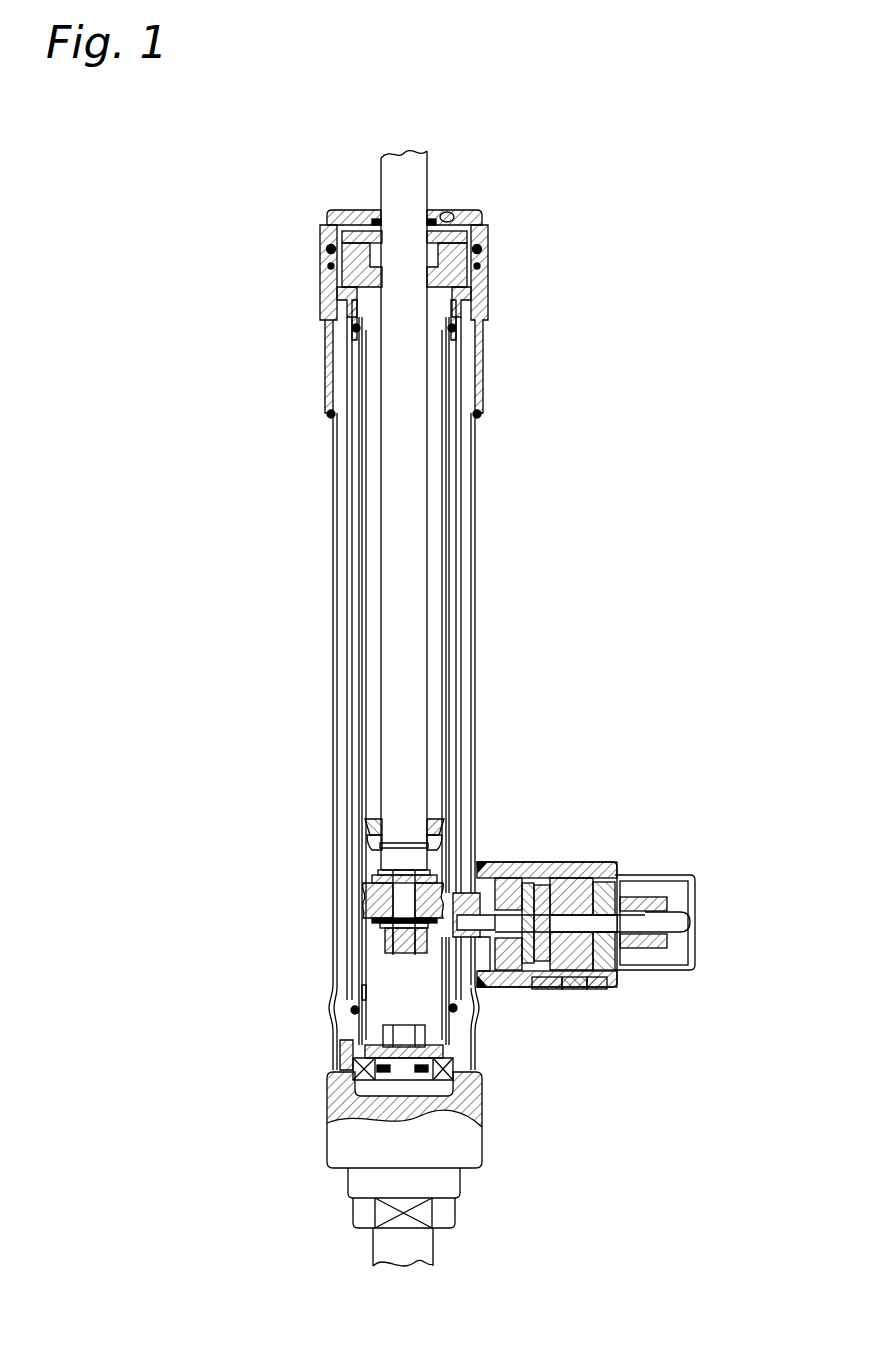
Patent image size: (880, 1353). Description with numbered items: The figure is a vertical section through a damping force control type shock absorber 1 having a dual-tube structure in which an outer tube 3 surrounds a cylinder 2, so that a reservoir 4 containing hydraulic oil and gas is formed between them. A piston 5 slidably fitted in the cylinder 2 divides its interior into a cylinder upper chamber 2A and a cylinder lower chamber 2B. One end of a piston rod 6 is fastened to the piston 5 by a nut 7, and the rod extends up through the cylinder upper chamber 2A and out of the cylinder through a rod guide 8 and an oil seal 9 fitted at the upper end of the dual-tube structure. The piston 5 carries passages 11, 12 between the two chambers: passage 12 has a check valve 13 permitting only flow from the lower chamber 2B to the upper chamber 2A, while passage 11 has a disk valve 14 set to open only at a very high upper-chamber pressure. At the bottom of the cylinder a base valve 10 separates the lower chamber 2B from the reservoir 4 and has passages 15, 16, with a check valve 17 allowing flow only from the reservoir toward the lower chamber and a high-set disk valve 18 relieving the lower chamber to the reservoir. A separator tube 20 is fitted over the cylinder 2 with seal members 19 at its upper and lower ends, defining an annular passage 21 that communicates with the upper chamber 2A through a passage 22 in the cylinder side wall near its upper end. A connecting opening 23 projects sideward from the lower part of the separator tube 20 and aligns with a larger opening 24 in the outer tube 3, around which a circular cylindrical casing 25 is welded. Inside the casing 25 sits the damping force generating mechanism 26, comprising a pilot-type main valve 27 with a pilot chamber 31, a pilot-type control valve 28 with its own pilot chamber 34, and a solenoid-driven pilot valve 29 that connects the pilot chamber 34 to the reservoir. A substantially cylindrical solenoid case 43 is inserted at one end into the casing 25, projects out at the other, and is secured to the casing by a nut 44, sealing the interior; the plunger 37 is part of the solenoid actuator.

The damping force control type shock absorber 1 is at (609, 210).
The cylinder 2 is at (448, 440).
The cylinder upper chamber 2A is at (347, 678).
The cylinder lower chamber 2B is at (362, 985).
The outer tube 3 is at (478, 480).
The reservoir 4 is at (333, 495).
The piston 5 is at (375, 900).
The piston rod 6 is at (388, 180).
The nut 7 is at (385, 950).
The rod guide 8 is at (332, 292).
The oil seal 9 is at (450, 213).
The base valve 10 is at (482, 1070).
The passage 11 is at (380, 885).
The passage 12 is at (482, 880).
The check valve 13 is at (471, 862).
The disk valve 14 is at (368, 925).
The passage 15 is at (335, 1100).
The passage 16 is at (465, 1125).
The check valve 17 is at (342, 1050).
The disk valve 18 is at (455, 1168).
The seal members 19 is at (323, 320).
The separator tube 20 is at (342, 578).
The annular passage 21 is at (462, 530).
The passage 22 is at (462, 365).
The connecting opening 23 is at (513, 862).
The opening 24 is at (480, 987).
The casing 25 is at (527, 870).
The damping force generating mechanism 26 is at (633, 872).
The main valve 27 is at (545, 870).
The control valve 28 is at (631, 847).
The pilot valve 29 is at (615, 895).
The pilot chamber 31 is at (540, 989).
The pilot chamber 34 is at (568, 989).
The plunger 37 is at (697, 892).
The solenoid case 43 is at (612, 965).
The nut 44 is at (592, 989).